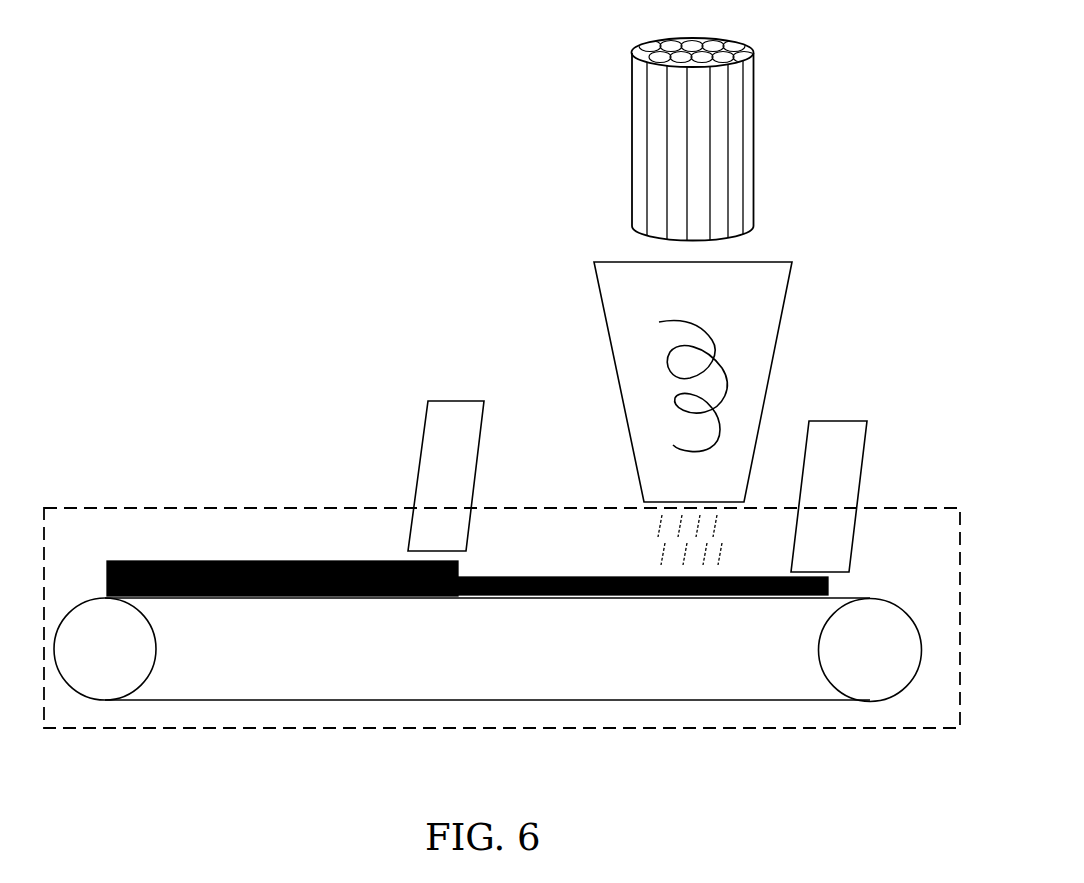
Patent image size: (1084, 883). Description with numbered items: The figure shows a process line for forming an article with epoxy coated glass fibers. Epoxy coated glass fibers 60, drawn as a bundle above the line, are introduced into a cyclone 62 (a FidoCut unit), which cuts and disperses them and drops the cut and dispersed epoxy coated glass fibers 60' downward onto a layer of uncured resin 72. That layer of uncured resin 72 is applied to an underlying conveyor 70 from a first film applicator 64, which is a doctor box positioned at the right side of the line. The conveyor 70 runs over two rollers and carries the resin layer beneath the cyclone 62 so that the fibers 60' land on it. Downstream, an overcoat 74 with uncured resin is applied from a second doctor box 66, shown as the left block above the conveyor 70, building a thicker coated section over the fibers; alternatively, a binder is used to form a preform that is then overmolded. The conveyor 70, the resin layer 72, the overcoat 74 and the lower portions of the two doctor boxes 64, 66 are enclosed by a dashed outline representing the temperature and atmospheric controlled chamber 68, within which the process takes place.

The epoxy coated glass fibers 60 is at (623, 139).
The cyclone 62 is at (603, 317).
The cut and dispersed epoxy coated glass fibers 60' is at (567, 437).
The first film applicator 64 is at (863, 447).
The second doctor box 66 is at (424, 433).
The temperature and atmospheric controlled chamber 68 is at (218, 508).
The conveyor 70 is at (849, 600).
The layer of uncured resin 72 is at (632, 578).
The overcoat 74 is at (175, 560).